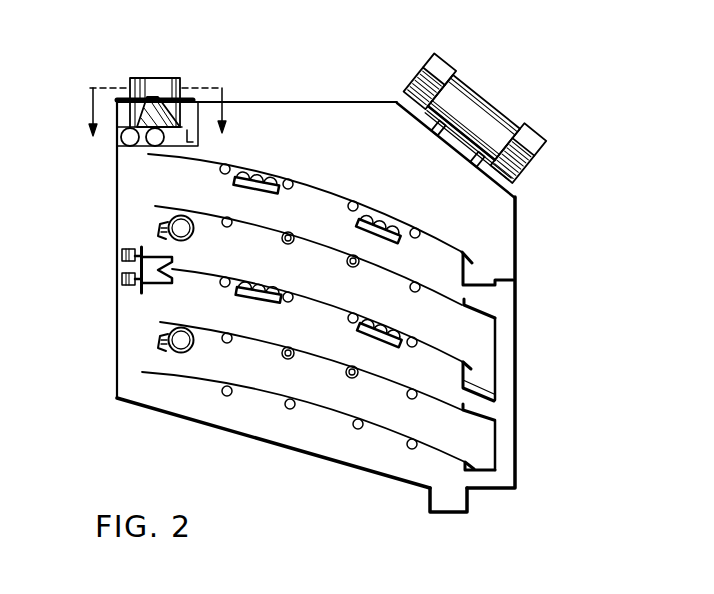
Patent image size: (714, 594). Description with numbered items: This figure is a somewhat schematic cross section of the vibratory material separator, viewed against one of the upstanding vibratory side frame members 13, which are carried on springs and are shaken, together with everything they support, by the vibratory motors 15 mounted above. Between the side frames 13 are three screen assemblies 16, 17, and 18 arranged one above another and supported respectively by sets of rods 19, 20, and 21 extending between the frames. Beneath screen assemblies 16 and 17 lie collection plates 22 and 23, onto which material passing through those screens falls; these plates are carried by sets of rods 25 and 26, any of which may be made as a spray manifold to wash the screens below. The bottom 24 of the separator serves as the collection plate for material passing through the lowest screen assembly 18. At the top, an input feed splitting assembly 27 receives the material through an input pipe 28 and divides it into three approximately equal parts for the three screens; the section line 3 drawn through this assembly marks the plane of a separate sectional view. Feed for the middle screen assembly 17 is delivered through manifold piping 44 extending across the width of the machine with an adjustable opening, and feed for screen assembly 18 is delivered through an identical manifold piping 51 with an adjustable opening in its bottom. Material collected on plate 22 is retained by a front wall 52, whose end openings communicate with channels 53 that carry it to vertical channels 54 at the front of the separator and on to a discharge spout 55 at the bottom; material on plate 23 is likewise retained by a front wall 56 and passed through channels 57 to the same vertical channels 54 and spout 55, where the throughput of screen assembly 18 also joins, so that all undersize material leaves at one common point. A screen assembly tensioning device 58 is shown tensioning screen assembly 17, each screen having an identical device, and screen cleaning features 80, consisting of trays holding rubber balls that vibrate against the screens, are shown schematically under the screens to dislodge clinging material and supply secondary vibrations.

The section line 3- 3 is at (161, 96).
The vibratory side frame members 13 is at (497, 206).
The vibratory motors 15 is at (482, 117).
The screen assembly 16 is at (310, 176).
The screen assembly 17 is at (455, 352).
The screen assembly 18 is at (450, 445).
The rods 19 is at (220, 170).
The rods 20 is at (220, 283).
The rods 21 is at (288, 409).
The collection plate 22 is at (326, 205).
The collection plate 23 is at (160, 322).
The bottom 24 is at (207, 423).
The rods 25 is at (185, 193).
The rods 26 is at (185, 376).
The input feed splitting assembly 27 is at (157, 69).
The input pipe 28 is at (180, 80).
The manifold piping 44 is at (194, 233).
The manifold piping 51 is at (142, 372).
The front wall 52 is at (467, 272).
The channels 53 is at (440, 295).
The vertical channels 54 is at (507, 367).
The discharge spout 55 is at (452, 500).
The front wall 56 is at (480, 405).
The channels 57 is at (483, 410).
The screen assembly tensioning device 58 is at (119, 267).
The screen cleaning features 80 is at (271, 174).